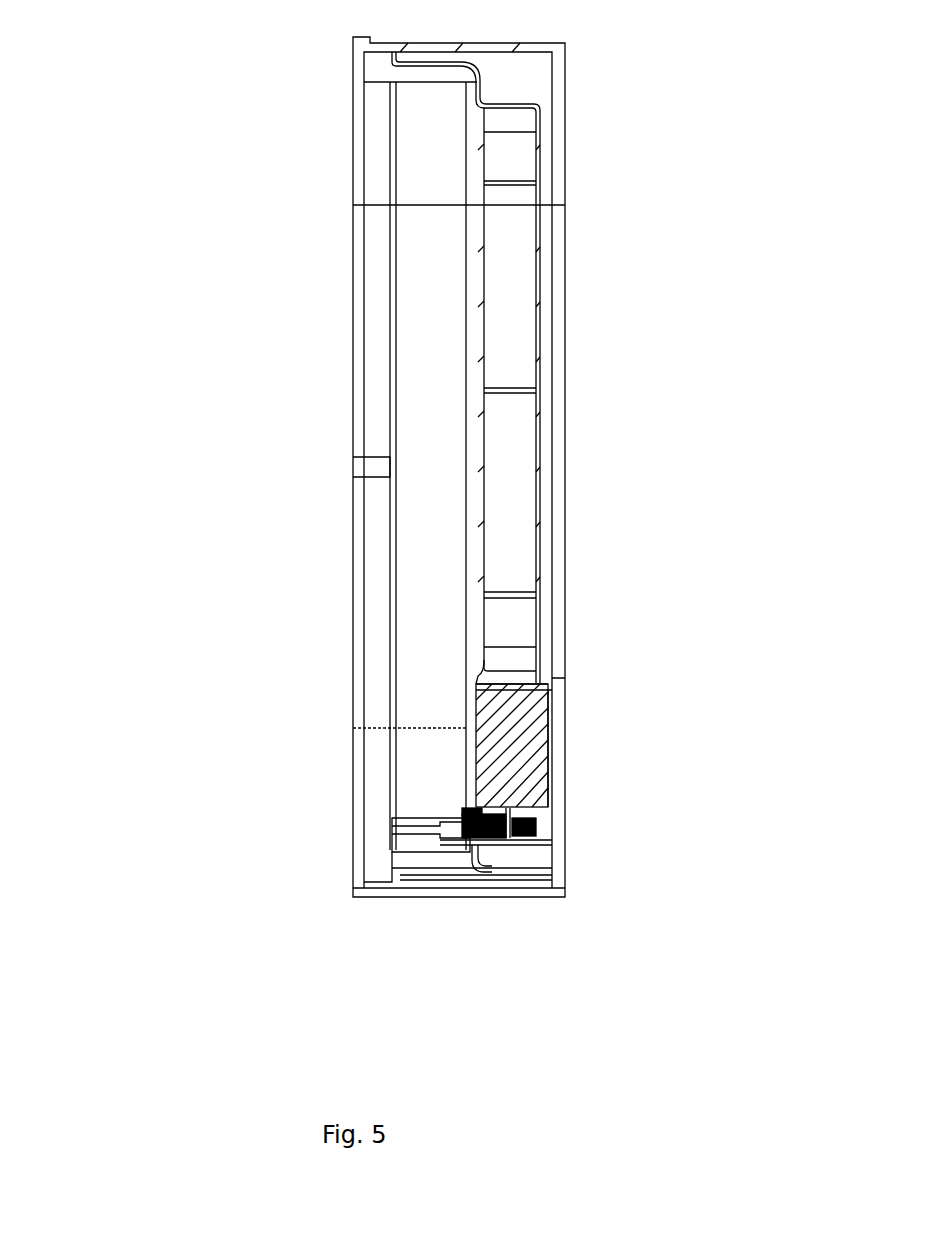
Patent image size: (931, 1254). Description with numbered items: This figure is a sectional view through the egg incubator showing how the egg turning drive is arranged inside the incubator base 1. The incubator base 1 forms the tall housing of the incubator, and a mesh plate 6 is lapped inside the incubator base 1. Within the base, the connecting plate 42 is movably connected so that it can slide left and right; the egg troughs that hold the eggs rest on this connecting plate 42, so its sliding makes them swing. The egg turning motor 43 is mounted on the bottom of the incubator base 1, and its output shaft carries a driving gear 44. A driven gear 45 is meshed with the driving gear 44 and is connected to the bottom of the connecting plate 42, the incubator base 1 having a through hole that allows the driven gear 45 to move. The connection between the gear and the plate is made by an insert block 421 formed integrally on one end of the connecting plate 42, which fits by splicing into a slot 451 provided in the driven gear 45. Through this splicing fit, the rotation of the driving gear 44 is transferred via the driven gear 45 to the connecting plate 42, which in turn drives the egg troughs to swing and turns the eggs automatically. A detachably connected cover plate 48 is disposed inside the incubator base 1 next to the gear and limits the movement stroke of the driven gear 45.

The incubator base 1 is at (538, 128).
The mesh plate 6 is at (482, 570).
The connecting plate 42 is at (408, 830).
The insert block 421 is at (450, 838).
The egg turning motor 43 is at (513, 730).
The driving gear 44 is at (536, 830).
The driven gear 45 is at (508, 838).
The slot 451 is at (465, 810).
The cover plate 48 is at (462, 840).